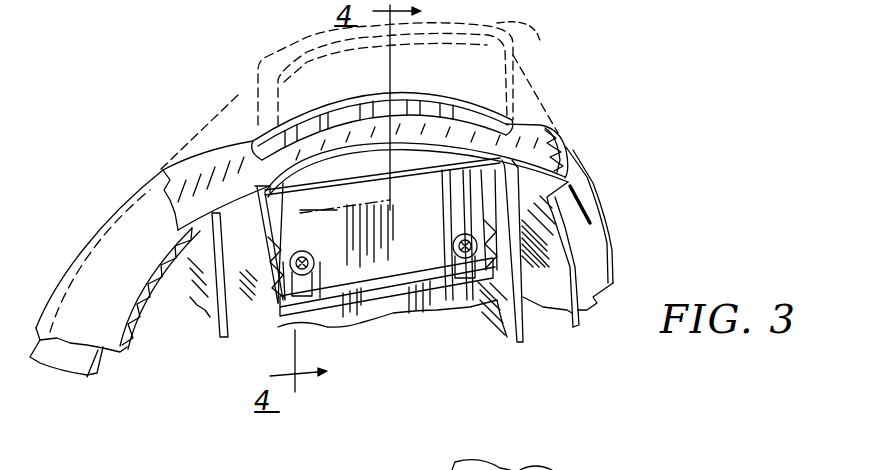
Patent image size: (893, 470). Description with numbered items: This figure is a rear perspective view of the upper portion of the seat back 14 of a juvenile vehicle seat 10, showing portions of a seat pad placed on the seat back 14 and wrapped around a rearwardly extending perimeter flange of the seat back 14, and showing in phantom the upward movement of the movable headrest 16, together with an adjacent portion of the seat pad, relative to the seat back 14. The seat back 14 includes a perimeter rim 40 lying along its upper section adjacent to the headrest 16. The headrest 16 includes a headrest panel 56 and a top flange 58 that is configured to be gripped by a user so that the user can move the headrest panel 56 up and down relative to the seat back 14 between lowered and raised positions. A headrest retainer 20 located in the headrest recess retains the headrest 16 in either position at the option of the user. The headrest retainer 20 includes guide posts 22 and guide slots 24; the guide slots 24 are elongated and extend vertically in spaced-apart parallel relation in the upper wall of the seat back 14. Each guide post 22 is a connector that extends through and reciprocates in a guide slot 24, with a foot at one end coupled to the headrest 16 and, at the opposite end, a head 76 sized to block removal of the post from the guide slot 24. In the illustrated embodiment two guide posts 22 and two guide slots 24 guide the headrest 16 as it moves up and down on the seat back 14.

The juvenile vehicle seat 10 is at (648, 240).
The seat back 14 is at (548, 340).
The movable headrest 16 is at (240, 117).
The headrest retainer 20 is at (422, 259).
The guide posts 22 is at (303, 276).
The guide slots 24 is at (246, 262).
The perimeter rim 40 is at (193, 210).
The headrest panel 56 is at (252, 90).
The top flange 58 is at (505, 19).
The head 76 is at (275, 268).